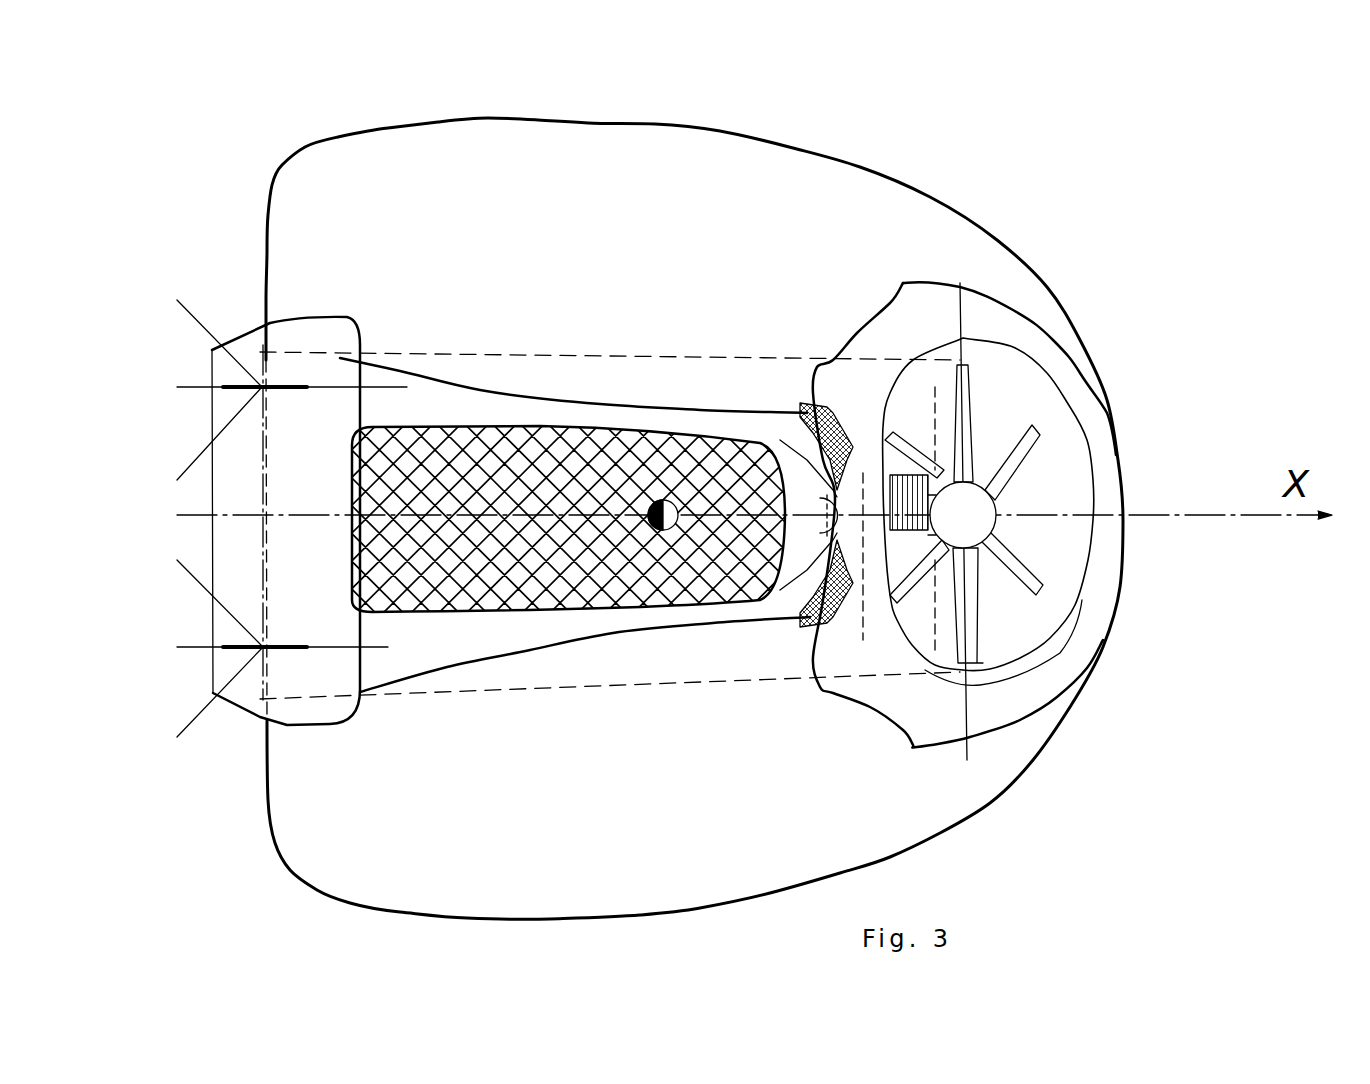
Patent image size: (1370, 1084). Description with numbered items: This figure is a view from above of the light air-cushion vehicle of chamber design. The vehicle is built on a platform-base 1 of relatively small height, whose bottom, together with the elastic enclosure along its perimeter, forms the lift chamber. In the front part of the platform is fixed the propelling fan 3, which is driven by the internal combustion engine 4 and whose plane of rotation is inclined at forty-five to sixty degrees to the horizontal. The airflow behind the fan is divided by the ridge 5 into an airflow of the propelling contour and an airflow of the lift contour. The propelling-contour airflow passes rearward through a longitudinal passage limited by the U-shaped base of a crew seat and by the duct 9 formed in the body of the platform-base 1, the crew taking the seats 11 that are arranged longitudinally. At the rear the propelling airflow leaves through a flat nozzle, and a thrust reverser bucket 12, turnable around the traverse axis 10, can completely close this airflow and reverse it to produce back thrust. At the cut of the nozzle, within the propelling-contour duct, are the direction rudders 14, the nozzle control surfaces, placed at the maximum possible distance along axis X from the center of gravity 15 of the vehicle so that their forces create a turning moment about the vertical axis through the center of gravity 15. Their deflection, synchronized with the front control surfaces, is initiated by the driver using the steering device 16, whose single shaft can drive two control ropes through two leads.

The platform-base 1 is at (880, 807).
The propelling fan 3 is at (977, 537).
The internal combustion engine 4 is at (985, 524).
The ridge 5 is at (973, 382).
The duct 9 is at (620, 680).
The traverse axis 10 is at (268, 450).
The seats 11 is at (452, 450).
The thrust reverser bucket 12 is at (348, 425).
The direction rudders 14 is at (250, 383).
The center of gravity 15 is at (674, 510).
The steering device 16 is at (567, 617).